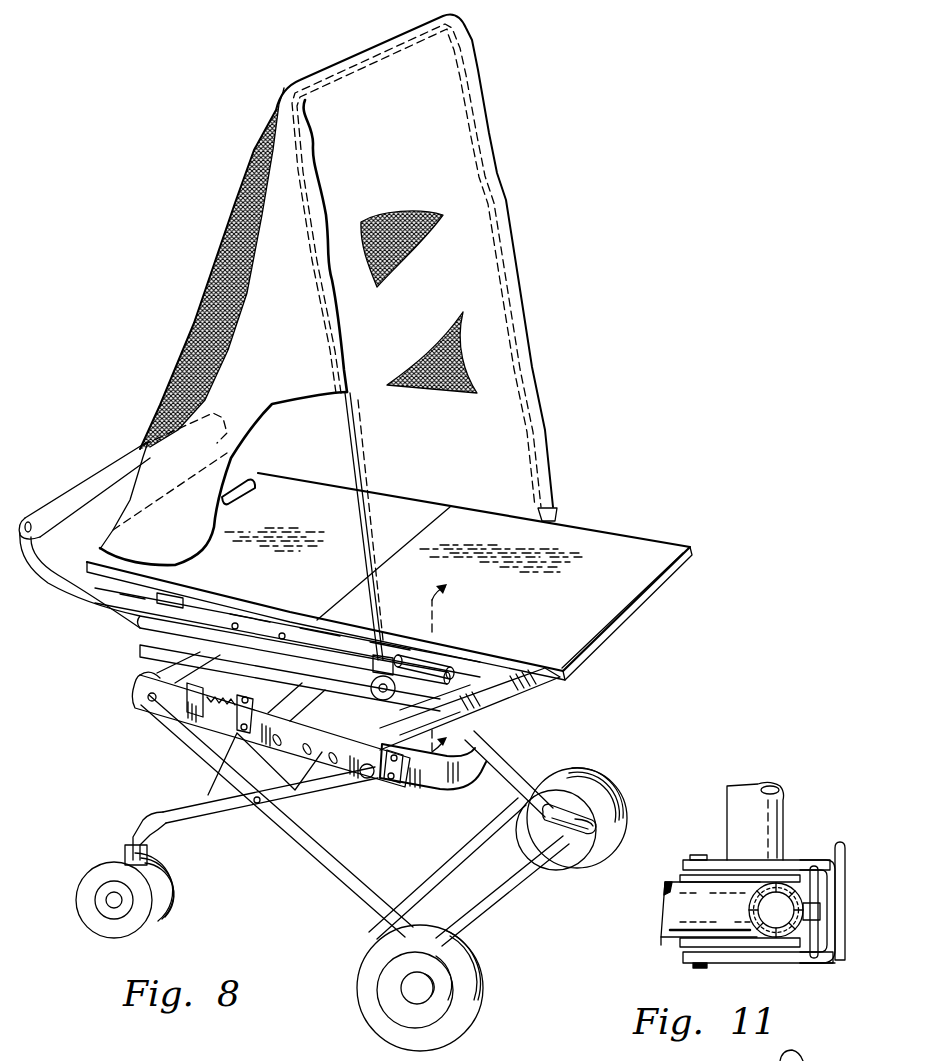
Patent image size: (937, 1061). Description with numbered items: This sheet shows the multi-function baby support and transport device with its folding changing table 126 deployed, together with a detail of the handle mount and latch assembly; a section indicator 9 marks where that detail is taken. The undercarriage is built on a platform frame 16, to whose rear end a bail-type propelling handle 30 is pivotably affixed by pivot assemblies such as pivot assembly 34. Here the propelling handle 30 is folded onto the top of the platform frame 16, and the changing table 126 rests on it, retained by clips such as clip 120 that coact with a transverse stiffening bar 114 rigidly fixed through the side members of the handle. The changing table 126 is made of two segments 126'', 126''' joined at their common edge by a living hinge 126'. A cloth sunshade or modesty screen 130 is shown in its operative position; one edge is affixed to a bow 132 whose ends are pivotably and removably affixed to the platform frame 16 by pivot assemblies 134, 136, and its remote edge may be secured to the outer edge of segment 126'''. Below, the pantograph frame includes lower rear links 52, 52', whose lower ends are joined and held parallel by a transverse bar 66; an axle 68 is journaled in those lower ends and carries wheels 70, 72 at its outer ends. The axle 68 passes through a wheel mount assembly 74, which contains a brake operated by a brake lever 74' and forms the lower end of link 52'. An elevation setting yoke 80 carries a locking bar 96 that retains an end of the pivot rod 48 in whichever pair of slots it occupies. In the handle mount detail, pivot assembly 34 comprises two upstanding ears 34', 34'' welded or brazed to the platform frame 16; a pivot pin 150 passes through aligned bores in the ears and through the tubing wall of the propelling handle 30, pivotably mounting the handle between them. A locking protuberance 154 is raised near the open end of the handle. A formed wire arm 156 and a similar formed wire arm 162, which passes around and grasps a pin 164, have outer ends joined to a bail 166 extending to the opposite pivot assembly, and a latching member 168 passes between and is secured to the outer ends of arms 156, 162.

In FIG. 8, the section line 9 is at (456, 661).
In FIG. 8, the platform frame 16 is at (160, 633).
In FIG. 11, the platform frame 16 is at (787, 797).
In FIG. 8, the propelling handle 30 is at (133, 613).
In FIG. 11, the propelling handle 30 is at (797, 893).
In FIG. 11, the pivot assembly 34 is at (759, 986).
In FIG. 11, the ear 34' is at (730, 970).
In FIG. 11, the ear 34'' is at (755, 813).
In FIG. 8, the pivot rod 48 is at (523, 693).
In FIG. 8, the lower rear link 52 is at (273, 816).
In FIG. 8, the lower rear link 52' is at (500, 774).
In FIG. 8, the transverse bar 66 is at (457, 867).
In FIG. 8, the axle 68 is at (503, 903).
In FIG. 8, the wheel 70 is at (463, 1022).
In FIG. 8, the wheel 72 is at (562, 773).
In FIG. 8, the wheel mount assembly 74 is at (584, 866).
In FIG. 8, the brake lever 74' is at (621, 800).
In FIG. 8, the elevation setting yoke 80 is at (187, 720).
In FIG. 8, the locking bar 96 is at (317, 737).
In FIG. 8, the stiffening bar 114 is at (97, 603).
In FIG. 8, the clip 120 is at (252, 478).
In FIG. 8, the folding changing table 126 is at (389, 576).
In FIG. 8, the living hinge 126' is at (407, 531).
In FIG. 8, the segment 126'' is at (538, 558).
In FIG. 8, the segment 126''' is at (281, 526).
In FIG. 8, the sunshade or modesty screen 130 is at (410, 164).
In FIG. 8, the bow 132 is at (363, 558).
In FIG. 8, the pivot assembly 134 is at (345, 698).
In FIG. 8, the pivot assembly 136 is at (565, 507).
In FIG. 11, the pivot pin 150 is at (773, 940).
In FIG. 11, the locking protuberance 154 is at (820, 910).
In FIG. 11, the formed wire arm 156 is at (800, 963).
In FIG. 11, the formed wire arm 162 is at (803, 857).
In FIG. 11, the pin 164 is at (693, 855).
In FIG. 11, the bail 166 is at (870, 808).
In FIG. 11, the latching member 168 is at (818, 933).